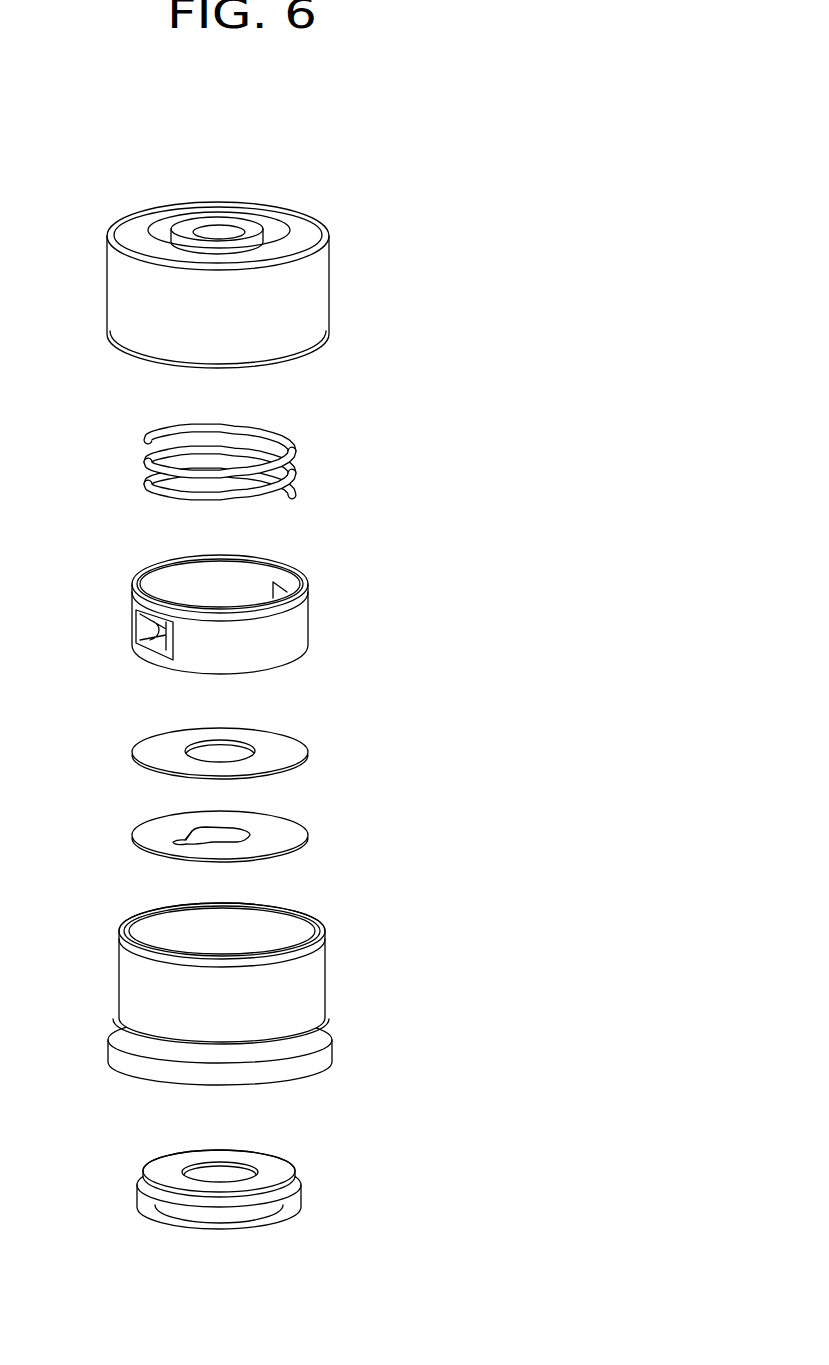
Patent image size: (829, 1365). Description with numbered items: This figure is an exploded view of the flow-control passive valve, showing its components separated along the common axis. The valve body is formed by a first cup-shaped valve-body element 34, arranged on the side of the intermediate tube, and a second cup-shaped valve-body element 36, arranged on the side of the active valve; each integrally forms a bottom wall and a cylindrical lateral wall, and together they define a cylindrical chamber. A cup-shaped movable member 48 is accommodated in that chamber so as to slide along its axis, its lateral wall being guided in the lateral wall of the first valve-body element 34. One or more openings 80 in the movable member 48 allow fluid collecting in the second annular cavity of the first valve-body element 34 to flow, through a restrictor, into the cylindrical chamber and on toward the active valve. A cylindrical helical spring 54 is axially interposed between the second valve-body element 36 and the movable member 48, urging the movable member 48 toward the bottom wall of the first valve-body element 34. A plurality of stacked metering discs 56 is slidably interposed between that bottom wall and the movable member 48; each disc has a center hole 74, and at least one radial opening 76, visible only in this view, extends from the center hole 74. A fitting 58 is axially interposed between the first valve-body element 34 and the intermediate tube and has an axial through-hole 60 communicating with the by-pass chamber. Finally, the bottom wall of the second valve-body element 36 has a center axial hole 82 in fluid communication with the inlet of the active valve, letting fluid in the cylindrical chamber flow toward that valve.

The first cup-shaped valve-body element 34 is at (323, 980).
The second cup-shaped valve-body element 36 is at (330, 273).
The movable member 48 is at (309, 612).
The cylindrical helical spring 54 is at (290, 444).
The metering discs 56 is at (305, 745).
The fitting 58 is at (280, 1210).
The axial through-hole 60 is at (223, 1172).
The center hole 74 is at (220, 760).
The radial opening 76 is at (183, 842).
The openings 80 is at (135, 637).
The center axial hole 82 is at (213, 235).